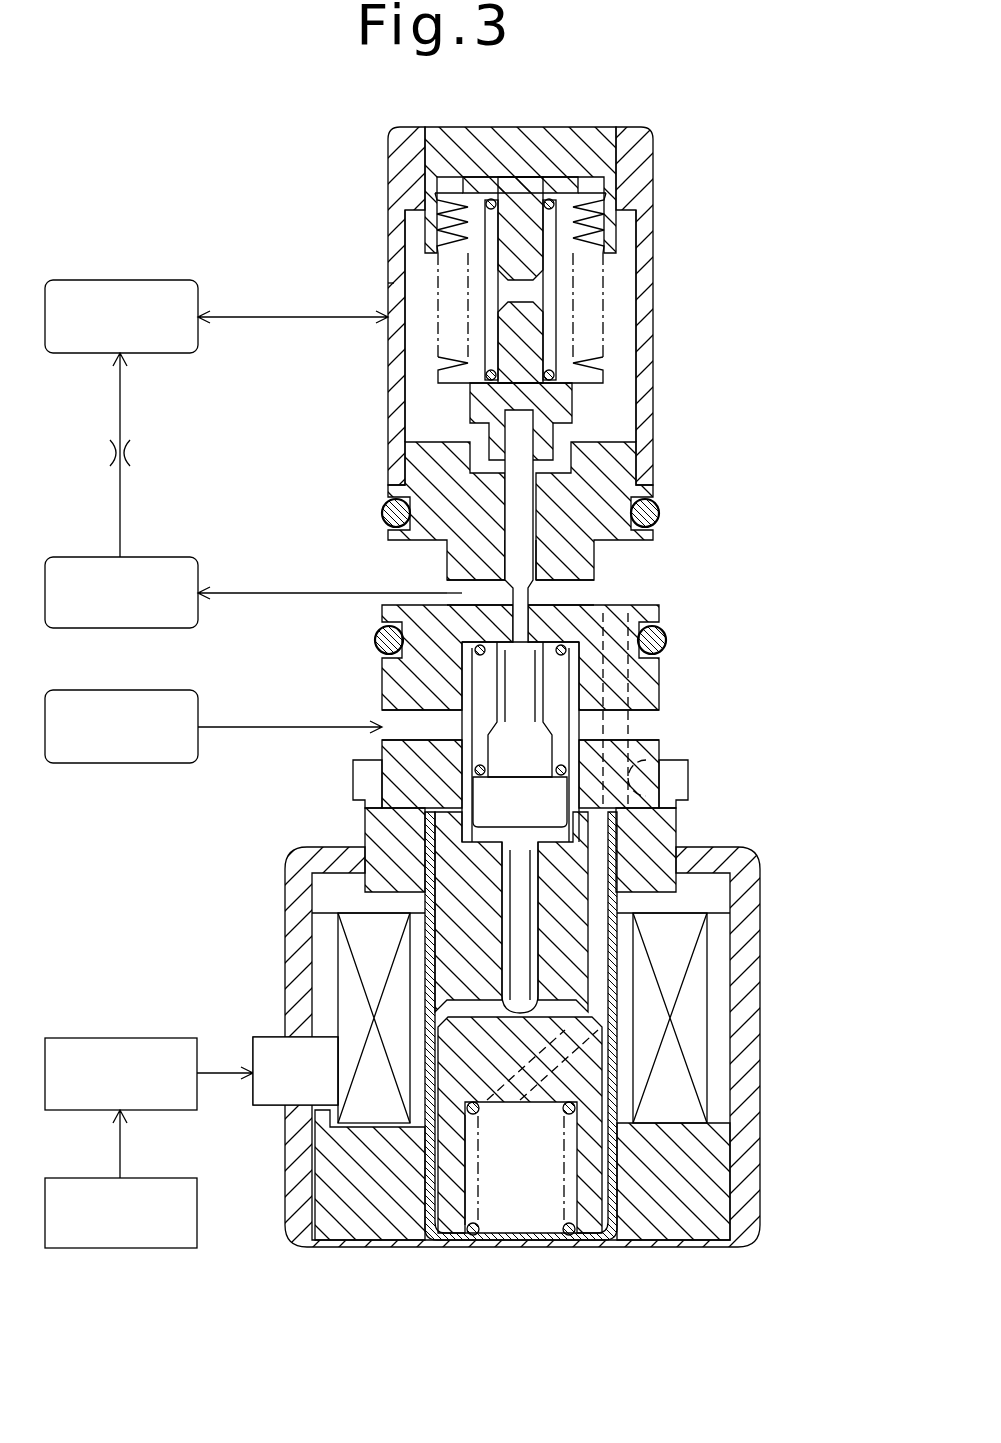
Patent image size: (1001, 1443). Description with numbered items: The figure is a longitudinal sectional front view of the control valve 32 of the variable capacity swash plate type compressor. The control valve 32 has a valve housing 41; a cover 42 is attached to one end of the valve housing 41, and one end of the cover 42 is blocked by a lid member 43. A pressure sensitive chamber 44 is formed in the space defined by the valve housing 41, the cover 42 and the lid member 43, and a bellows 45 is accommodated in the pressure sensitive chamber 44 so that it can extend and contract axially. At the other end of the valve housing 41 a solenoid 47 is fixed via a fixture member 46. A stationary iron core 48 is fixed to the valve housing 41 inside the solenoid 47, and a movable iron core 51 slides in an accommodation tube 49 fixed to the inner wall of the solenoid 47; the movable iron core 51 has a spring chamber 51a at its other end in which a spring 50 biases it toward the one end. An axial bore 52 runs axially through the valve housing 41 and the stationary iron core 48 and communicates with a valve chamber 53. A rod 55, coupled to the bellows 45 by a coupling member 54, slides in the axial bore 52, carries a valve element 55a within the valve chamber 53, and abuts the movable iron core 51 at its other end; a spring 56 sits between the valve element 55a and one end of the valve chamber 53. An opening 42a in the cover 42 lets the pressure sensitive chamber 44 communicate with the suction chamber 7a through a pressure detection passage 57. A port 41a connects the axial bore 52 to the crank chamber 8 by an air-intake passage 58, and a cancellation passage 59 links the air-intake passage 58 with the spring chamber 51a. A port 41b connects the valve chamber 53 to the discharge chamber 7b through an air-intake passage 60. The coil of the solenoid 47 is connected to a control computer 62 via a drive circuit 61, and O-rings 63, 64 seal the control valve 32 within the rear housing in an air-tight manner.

The suction chamber 7a is at (73, 280).
The discharge chamber 7b is at (73, 690).
The crank chamber 8 is at (70, 557).
The control valve 32 is at (353, 143).
The valve housing 41 is at (612, 467).
The port 41a is at (590, 594).
The port 41b is at (642, 715).
The cover 42 is at (647, 316).
The opening 42a is at (388, 283).
The lid member 43 is at (510, 140).
The pressure sensitive chamber 44 is at (625, 364).
The bellows 45 is at (583, 287).
The fixture member 46 is at (665, 828).
The solenoid 47 is at (738, 980).
The stationary iron core 48 is at (572, 895).
The accommodation tube 49 is at (544, 1241).
The spring 50 is at (481, 1241).
The movable iron core 51 is at (590, 1222).
The spring chamber 51a is at (472, 1170).
The axial bore 52 is at (566, 567).
The valve chamber 53 is at (566, 678).
The coupling member 54 is at (492, 398).
The rod 55 is at (515, 490).
The valve element 55a is at (510, 672).
The spring 56 is at (458, 645).
The pressure detection passage 57 is at (255, 317).
The air-intake passage 58 is at (280, 593).
The cancellation passage 59 is at (646, 778).
The air-intake passage 60 is at (283, 727).
The drive circuit 61 is at (73, 1038).
The control computer 62 is at (73, 1178).
The O-ring 63 is at (660, 518).
The O-ring 64 is at (666, 640).